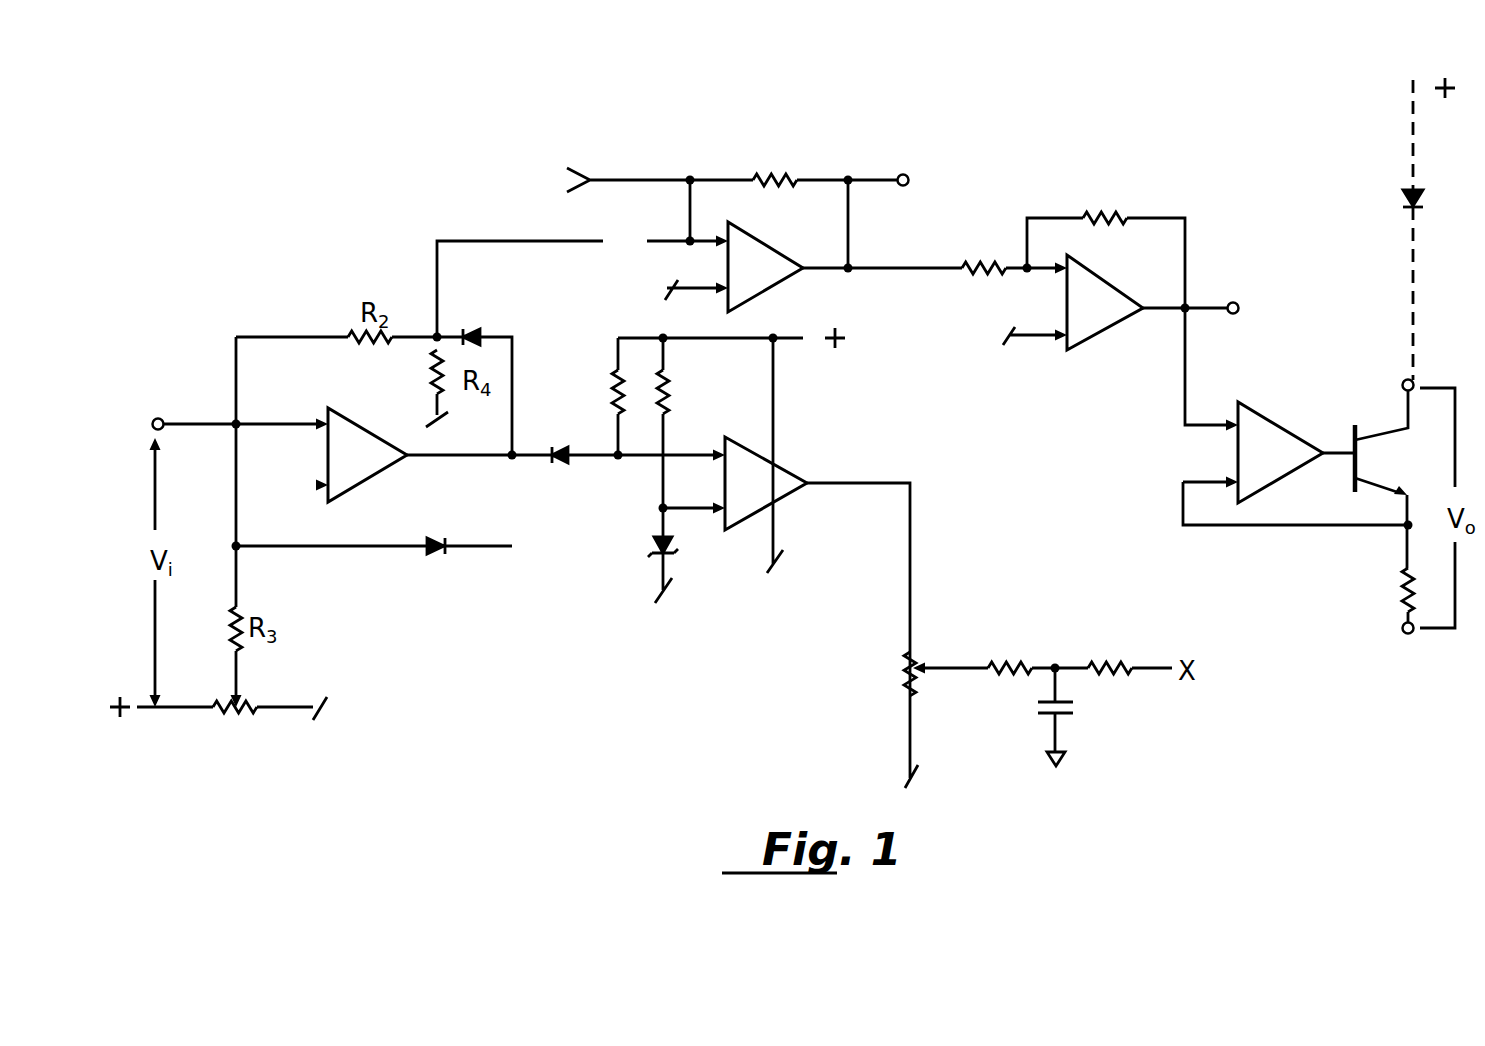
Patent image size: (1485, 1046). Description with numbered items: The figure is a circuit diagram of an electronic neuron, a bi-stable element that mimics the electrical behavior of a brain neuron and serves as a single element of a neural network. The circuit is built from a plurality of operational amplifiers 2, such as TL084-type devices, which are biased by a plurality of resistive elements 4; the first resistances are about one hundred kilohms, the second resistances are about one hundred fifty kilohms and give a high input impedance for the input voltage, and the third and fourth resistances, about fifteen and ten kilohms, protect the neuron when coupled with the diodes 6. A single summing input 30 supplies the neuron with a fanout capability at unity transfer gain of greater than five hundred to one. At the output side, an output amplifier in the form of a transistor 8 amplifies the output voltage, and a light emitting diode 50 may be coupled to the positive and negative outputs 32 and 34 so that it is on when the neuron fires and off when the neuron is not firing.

The operational amplifiers 2 is at (390, 478).
The resistive elements 4 is at (809, 156).
The diodes 6 is at (499, 329).
The transistor 8 is at (1373, 420).
The summing input 30 is at (194, 710).
The positive output 32 is at (1424, 376).
The negative output 34 is at (1396, 642).
The light emitting diode 50 is at (1398, 191).